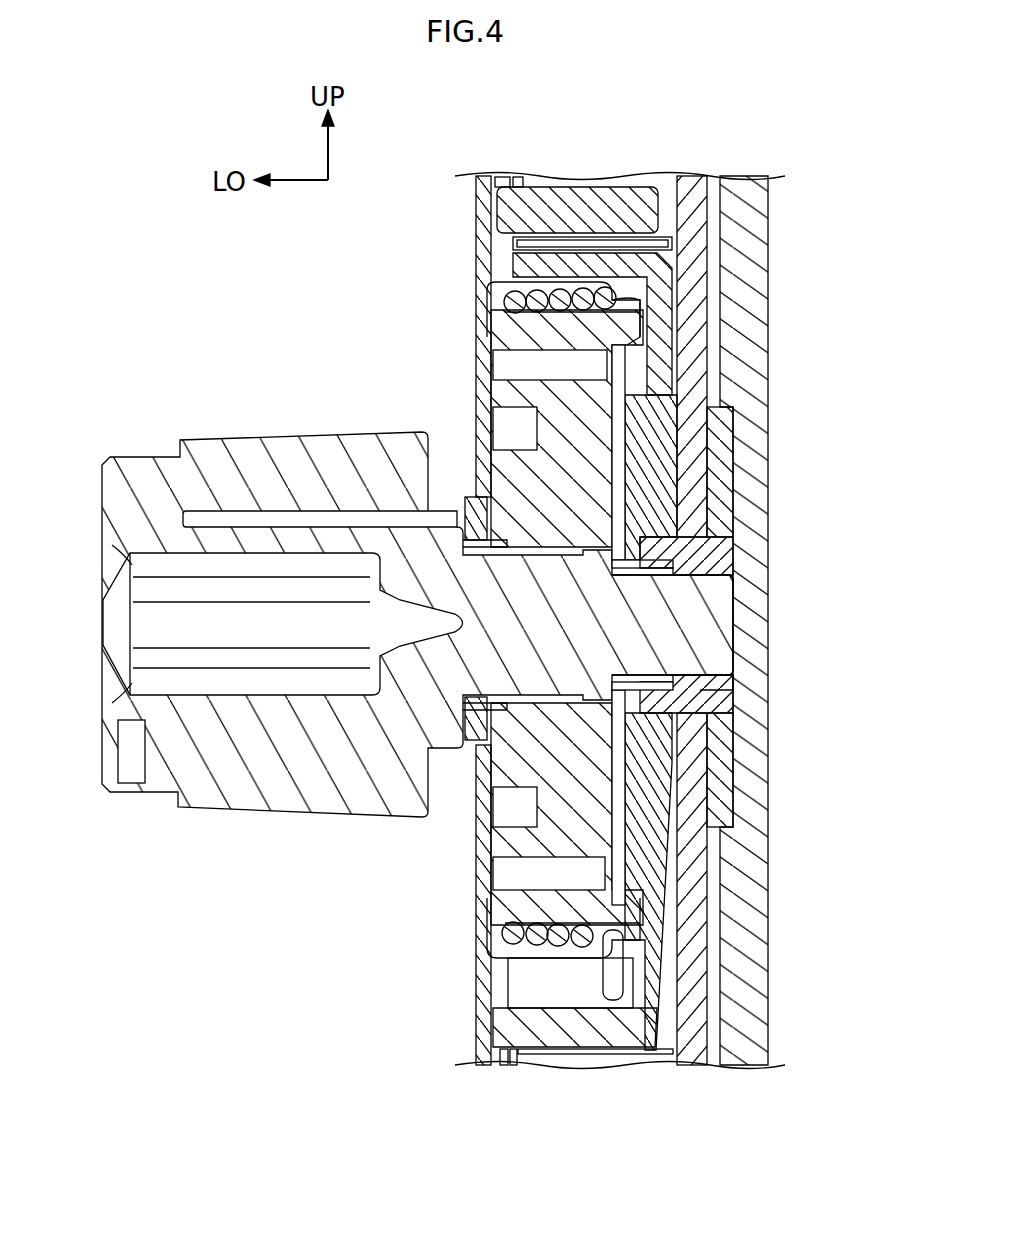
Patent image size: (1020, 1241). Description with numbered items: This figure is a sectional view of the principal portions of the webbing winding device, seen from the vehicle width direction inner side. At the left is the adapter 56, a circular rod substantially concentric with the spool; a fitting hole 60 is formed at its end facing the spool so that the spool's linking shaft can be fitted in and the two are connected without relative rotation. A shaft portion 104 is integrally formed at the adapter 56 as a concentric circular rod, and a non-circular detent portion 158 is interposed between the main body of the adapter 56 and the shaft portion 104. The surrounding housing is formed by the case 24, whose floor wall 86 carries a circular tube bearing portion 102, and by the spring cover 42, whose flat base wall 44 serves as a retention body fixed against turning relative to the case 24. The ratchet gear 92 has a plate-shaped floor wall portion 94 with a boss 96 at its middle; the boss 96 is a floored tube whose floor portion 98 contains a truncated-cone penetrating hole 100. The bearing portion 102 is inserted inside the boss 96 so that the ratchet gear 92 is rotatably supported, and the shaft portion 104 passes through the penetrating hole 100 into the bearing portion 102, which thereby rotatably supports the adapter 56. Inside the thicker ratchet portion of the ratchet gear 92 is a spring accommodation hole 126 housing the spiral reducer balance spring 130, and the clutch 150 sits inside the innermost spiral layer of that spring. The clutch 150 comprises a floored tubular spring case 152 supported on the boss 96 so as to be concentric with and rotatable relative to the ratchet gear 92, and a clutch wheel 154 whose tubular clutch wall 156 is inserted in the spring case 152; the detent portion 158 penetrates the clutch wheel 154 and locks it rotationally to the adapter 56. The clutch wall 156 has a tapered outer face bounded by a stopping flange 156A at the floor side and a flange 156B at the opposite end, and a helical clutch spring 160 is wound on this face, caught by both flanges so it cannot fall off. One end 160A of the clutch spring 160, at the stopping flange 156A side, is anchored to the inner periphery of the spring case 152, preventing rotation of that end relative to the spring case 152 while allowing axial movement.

The adapter 56 is at (143, 452).
The fitting hole 60 is at (118, 560).
The shaft portion 104 is at (718, 602).
The penetrating hole 100 is at (735, 673).
The base wall 44 is at (477, 212).
The spring cover 42 is at (510, 620).
The reducer balance spring 130 is at (722, 238).
The detent portion 158 is at (470, 535).
The clutch spring 160 is at (505, 300).
The clutch wheel 154 is at (478, 326).
The clutch wall 156 is at (640, 300).
The floor wall portion 94 is at (700, 345).
The ratchet gear 92 is at (772, 620).
The floor wall 86 is at (768, 278).
The case 24 is at (799, 620).
The clutch 150 is at (688, 420).
The boss 96 is at (680, 505).
The floor portion 98 is at (685, 553).
The bearing portion 102 is at (720, 712).
The spring case 152 is at (680, 888).
The one end of the clutch spring 160A is at (605, 982).
The flange 156B is at (482, 945).
The stopping flange 156A is at (650, 942).
The spring accommodation hole 126 is at (690, 1012).